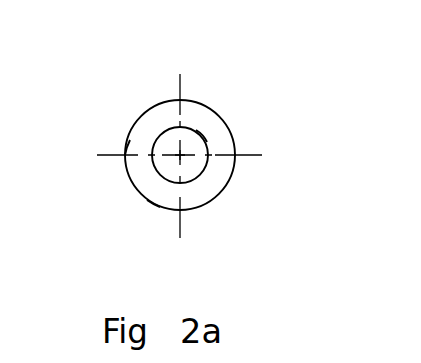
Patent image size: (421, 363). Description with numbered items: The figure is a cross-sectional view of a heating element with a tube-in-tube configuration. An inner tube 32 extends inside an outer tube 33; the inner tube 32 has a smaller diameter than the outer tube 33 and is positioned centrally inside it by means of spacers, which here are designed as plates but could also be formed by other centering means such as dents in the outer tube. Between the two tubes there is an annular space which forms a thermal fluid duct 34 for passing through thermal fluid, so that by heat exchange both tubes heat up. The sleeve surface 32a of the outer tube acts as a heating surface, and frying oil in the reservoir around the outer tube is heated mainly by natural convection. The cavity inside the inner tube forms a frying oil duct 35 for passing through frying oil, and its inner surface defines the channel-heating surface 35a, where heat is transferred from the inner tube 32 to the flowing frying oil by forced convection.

The inner tube 32 is at (157, 138).
The sleeve surface 32a is at (162, 102).
The outer tube 33 is at (125, 155).
The thermal fluid duct 34 is at (147, 200).
The frying oil duct 35 is at (186, 170).
The channel-heating surface 35a is at (207, 142).